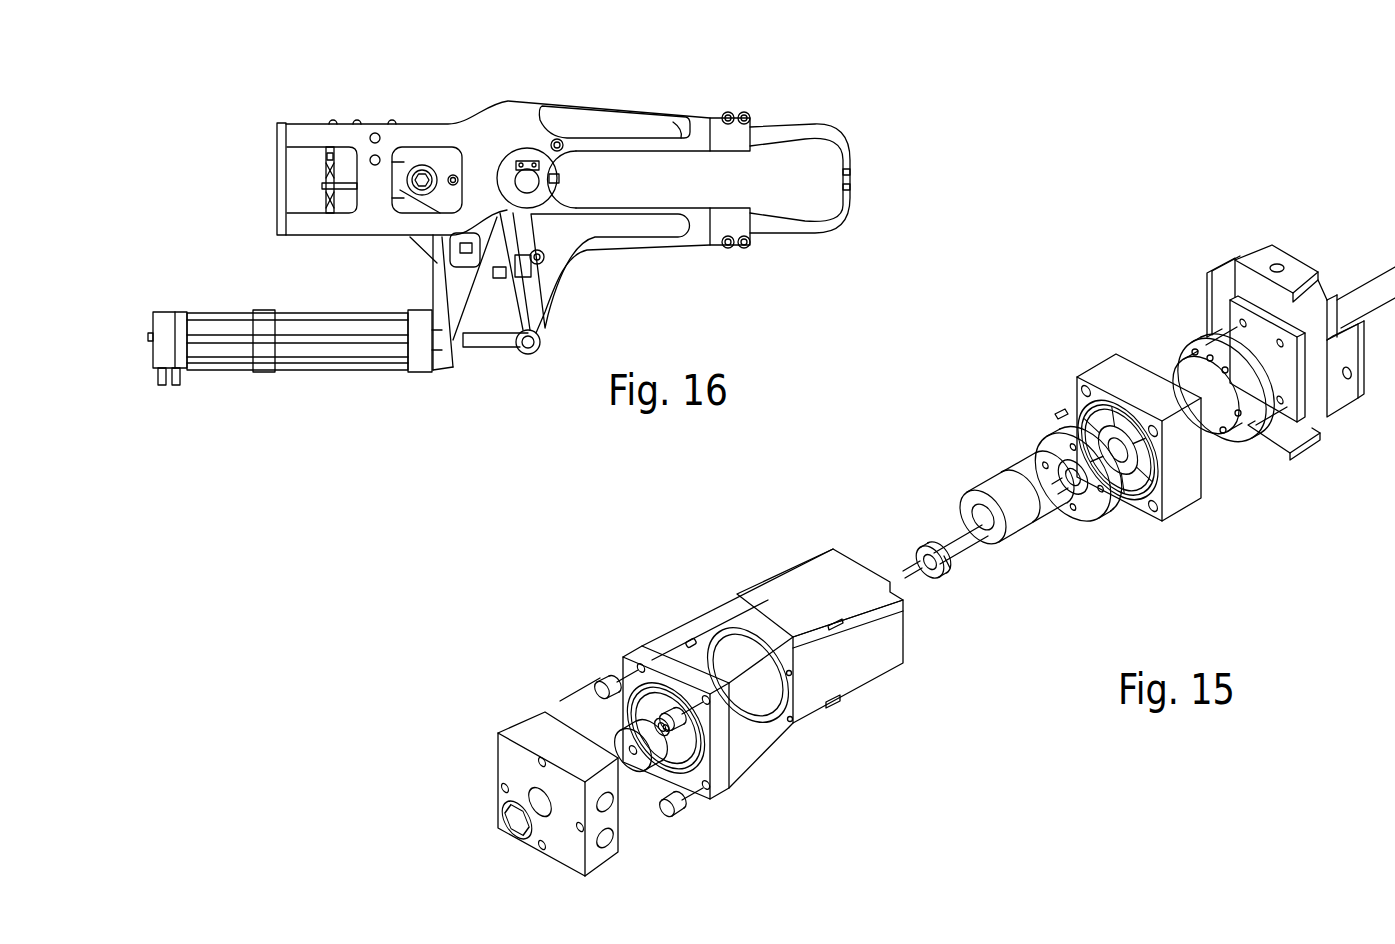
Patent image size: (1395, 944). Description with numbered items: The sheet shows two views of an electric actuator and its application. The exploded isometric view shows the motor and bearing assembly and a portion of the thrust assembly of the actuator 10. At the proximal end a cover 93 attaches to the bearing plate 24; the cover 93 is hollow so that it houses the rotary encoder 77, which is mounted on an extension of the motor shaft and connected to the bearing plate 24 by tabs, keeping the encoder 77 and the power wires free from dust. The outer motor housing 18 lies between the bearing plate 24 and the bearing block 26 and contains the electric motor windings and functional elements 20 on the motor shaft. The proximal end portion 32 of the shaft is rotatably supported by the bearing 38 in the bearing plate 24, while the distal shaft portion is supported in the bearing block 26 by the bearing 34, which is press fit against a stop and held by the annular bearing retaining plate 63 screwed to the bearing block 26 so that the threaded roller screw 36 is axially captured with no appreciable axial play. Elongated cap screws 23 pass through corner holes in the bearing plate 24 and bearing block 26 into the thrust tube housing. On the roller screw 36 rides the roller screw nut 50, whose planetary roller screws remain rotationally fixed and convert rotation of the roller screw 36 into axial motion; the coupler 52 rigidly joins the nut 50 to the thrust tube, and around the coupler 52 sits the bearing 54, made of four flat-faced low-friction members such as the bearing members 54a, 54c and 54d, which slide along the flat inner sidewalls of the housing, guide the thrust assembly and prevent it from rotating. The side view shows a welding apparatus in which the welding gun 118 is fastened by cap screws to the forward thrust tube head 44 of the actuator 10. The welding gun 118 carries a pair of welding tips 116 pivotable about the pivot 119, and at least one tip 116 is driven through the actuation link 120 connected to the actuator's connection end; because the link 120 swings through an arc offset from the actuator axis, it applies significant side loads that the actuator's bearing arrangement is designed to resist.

In FIG. 16, the actuator 10 is at (249, 298).
In FIG. 16, the thrust tube head 44 is at (432, 358).
In FIG. 16, the welding tips 116 is at (796, 135).
In FIG. 16, the welding gun 118 is at (451, 108).
In FIG. 16, the pivot 119 is at (527, 172).
In FIG. 16, the actuation link 120 is at (498, 345).
In FIG. 15, the outer motor housing 18 is at (812, 598).
In FIG. 15, the electric motor windings and functional elements 20 is at (1016, 527).
In FIG. 15, the cap screws 23 is at (694, 630).
In FIG. 15, the bearing plate 24 is at (718, 780).
In FIG. 15, the bearing block 26 is at (1130, 376).
In FIG. 15, the proximal end portion 32 is at (962, 530).
In FIG. 15, the bearing 34 is at (1072, 420).
In FIG. 15, the roller screw 36 is at (1356, 286).
In FIG. 15, the bearing 38 is at (936, 580).
In FIG. 15, the roller screw nut 50 is at (1218, 347).
In FIG. 15, the coupler 52 is at (1291, 430).
In FIG. 15, the bearing 54 is at (1350, 408).
In FIG. 15, the bearing member 54a is at (1292, 275).
In FIG. 15, the bearing member 54c is at (1272, 440).
In FIG. 15, the bearing member 54d is at (1218, 278).
In FIG. 15, the bearing retaining plate 63 is at (1088, 500).
In FIG. 15, the rotary encoder 77 is at (641, 762).
In FIG. 15, the cover 93 is at (556, 738).